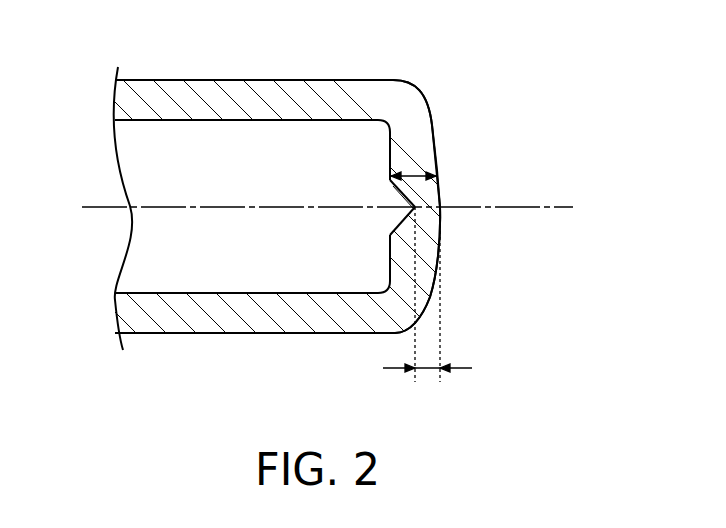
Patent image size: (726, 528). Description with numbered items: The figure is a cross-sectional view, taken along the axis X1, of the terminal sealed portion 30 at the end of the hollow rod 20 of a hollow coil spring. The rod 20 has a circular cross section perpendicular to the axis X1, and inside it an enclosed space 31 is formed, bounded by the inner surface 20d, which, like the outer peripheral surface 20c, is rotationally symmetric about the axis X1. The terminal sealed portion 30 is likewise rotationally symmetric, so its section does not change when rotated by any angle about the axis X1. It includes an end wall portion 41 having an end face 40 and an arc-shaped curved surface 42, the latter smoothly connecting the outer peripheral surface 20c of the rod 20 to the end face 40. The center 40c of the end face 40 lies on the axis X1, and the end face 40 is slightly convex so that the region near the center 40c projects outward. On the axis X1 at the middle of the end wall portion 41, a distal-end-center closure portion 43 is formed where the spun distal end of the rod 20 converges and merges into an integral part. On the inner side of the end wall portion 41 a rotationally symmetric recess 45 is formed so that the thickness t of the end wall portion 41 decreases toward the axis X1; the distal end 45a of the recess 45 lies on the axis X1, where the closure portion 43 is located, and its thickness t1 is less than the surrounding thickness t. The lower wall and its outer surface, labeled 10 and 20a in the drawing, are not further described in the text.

The bottom wall portion 10 is at (195, 334).
The rod 20 is at (200, 93).
The outer surface of lower wall 20a is at (331, 321).
The outer peripheral surface 20c is at (338, 80).
The inner surface 20d is at (262, 121).
The terminal sealed portion 30 is at (480, 80).
The enclosed space 31 is at (145, 253).
The end face 40 is at (430, 284).
The center of the end face 40c is at (440, 212).
The end wall portion 41 is at (431, 120).
The arc-shaped curved surface 42 is at (424, 97).
The distal-end-center closure portion 43 is at (440, 192).
The recess 45 is at (395, 198).
The distal end of the recess 45a is at (410, 209).
The thickness of the end wall portion t is at (416, 172).
The thickness of the distal-end-center closure portion t1 is at (426, 373).
The axis X1 is at (540, 206).